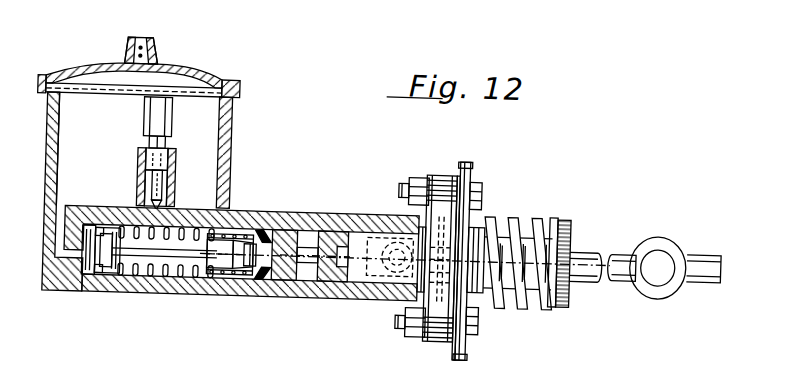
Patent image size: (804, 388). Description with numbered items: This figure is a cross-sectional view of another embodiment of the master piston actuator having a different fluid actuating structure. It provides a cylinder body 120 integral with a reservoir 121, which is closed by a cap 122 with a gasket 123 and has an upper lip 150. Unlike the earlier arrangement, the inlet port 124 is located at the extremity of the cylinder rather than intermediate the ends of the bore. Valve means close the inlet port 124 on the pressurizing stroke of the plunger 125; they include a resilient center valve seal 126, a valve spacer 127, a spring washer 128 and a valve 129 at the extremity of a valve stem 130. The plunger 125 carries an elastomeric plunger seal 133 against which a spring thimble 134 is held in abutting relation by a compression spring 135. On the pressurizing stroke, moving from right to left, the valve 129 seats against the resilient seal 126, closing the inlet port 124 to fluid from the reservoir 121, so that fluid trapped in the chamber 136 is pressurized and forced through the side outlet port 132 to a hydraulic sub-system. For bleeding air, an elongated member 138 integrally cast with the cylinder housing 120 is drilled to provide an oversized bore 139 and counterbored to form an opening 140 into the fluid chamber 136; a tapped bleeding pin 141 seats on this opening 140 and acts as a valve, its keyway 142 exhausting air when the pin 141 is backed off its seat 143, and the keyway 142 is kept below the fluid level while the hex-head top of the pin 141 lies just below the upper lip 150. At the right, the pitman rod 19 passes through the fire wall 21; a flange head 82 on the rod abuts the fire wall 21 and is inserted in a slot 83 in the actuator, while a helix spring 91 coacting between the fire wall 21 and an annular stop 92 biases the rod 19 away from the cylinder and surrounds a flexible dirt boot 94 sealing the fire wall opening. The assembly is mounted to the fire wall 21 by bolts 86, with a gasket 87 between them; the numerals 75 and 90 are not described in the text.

The pitman rod 19 is at (588, 232).
The fire wall 21 is at (467, 151).
The push rod socket 75 is at (384, 272).
The flange head 82 is at (446, 225).
The slot 83 is at (482, 304).
The bolts 86 is at (406, 174).
The gasket 87 is at (455, 331).
The flange 90 is at (436, 169).
The helix spring 91 is at (531, 206).
The annular flange or stop 92 is at (559, 205).
The flexible dirt shield or boot 94 is at (497, 214).
The cylinder body 120 is at (255, 287).
The reservoir 121 is at (229, 130).
The cap 122 is at (167, 59).
The gasket 123 is at (95, 69).
The inlet port 124 is at (70, 252).
The plunger 125 is at (288, 230).
The resilient center valve seal 126 is at (86, 261).
The valve spacer 127 is at (113, 270).
The spring washer 128 is at (108, 268).
The valve 129 is at (96, 267).
The valve stem 130 is at (191, 269).
The outlet port 132 is at (153, 277).
The elastomeric plunger seal 133 is at (262, 224).
The spring thimble 134 is at (246, 274).
The compression spring 135 is at (178, 269).
The chamber 136 is at (204, 268).
The elongated member 138 is at (136, 170).
The oversized bore 139 is at (170, 176).
The opening 140 is at (174, 199).
The bleeding pin 141 is at (169, 109).
The keyway 142 is at (160, 144).
The seat 143 is at (148, 197).
The upper lip 150 is at (227, 72).